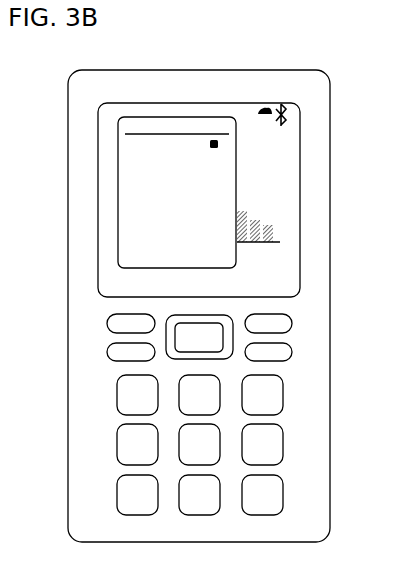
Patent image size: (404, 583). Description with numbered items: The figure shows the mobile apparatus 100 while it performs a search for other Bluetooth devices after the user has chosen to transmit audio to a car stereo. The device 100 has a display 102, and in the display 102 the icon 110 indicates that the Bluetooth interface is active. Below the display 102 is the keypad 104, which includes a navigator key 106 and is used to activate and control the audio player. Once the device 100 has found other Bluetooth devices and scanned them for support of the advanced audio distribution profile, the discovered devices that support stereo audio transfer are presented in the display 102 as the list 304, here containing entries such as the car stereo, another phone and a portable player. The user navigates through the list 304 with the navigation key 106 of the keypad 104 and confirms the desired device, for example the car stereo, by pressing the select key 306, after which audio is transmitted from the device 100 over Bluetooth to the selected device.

The apparatus 100 is at (99, 565).
The display 102 is at (300, 233).
The keypad 104 is at (283, 397).
The navigator key 106 is at (215, 315).
The icon 110 is at (289, 113).
The list 304 is at (118, 145).
The select key 306 is at (110, 330).